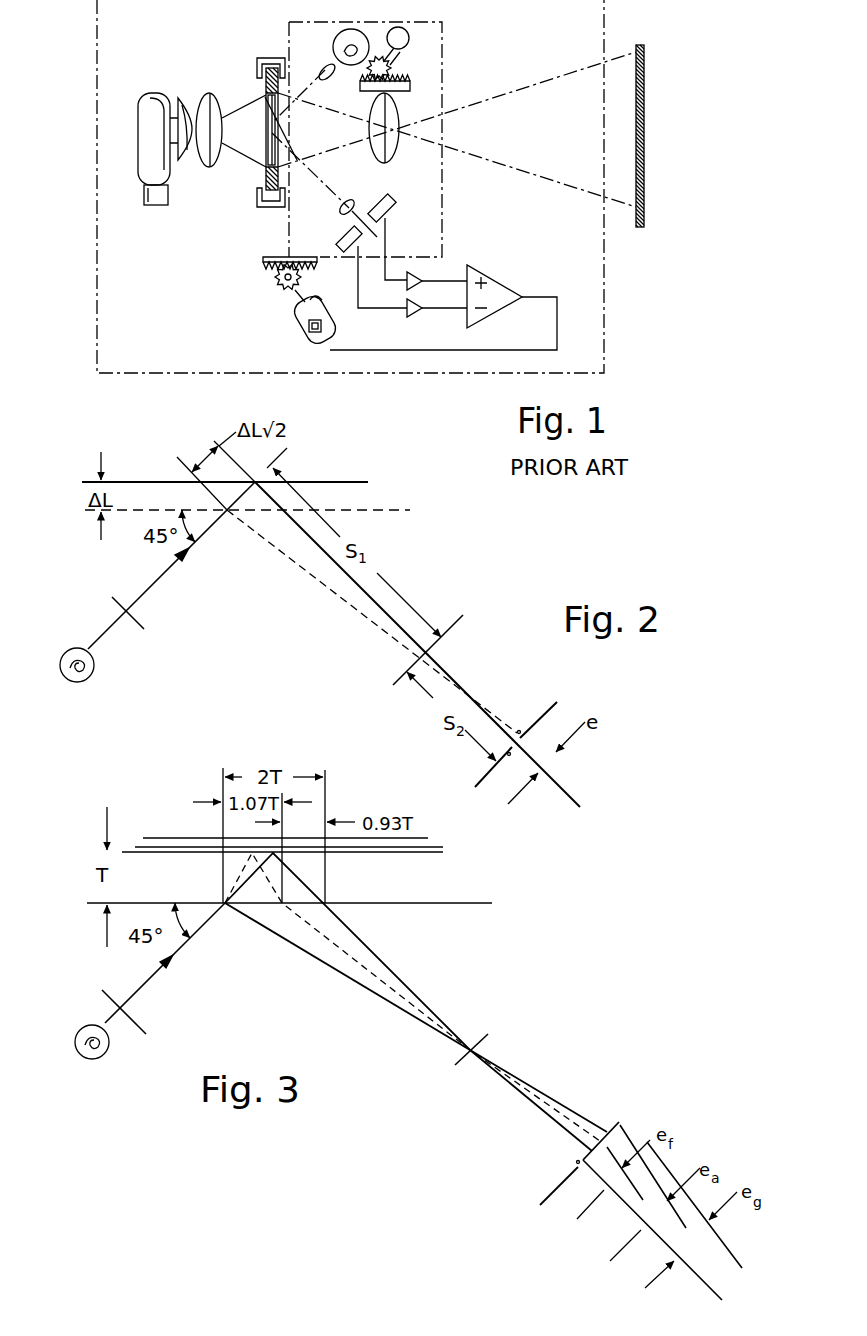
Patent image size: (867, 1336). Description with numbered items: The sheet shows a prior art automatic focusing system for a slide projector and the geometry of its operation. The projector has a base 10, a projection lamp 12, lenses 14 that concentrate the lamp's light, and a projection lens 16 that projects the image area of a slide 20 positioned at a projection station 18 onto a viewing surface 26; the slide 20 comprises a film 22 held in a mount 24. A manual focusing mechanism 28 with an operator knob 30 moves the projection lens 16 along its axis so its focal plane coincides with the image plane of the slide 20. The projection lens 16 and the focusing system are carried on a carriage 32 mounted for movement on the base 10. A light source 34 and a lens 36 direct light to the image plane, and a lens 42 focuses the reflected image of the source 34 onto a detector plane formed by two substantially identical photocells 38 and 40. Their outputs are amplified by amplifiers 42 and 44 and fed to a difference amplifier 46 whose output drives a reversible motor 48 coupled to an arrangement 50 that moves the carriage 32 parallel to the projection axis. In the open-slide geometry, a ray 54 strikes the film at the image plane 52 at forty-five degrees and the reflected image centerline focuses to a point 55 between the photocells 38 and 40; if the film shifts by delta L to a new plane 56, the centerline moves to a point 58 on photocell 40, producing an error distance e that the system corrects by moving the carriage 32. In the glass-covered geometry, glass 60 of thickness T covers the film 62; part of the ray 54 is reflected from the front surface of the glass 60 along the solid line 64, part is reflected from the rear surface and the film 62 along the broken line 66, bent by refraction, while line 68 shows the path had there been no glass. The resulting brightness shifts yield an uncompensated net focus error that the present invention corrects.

In FIG. 1, the base 10 is at (607, 25).
In FIG. 1, the projection lamp 12 is at (142, 94).
In FIG. 1, the lenses 14 is at (207, 94).
In FIG. 1, the projection lens 16 is at (395, 143).
In FIG. 1, the projection station 18 is at (268, 57).
In FIG. 1, the slide 20 is at (261, 99).
In FIG. 1, the film 22 is at (266, 152).
In FIG. 1, the mount 24 is at (259, 195).
In FIG. 1, the viewing surface 26 is at (638, 226).
In FIG. 1, the manual focusing mechanism 28 is at (391, 64).
In FIG. 1, the knob 30 is at (399, 27).
In FIG. 1, the carriage 32 is at (443, 78).
In FIG. 1, the light source 34 is at (354, 29).
In FIG. 2, the light source 34 is at (88, 648).
In FIG. 3, the light source 34 is at (95, 1025).
In FIG. 1, the lens 36 is at (325, 66).
In FIG. 2, the lens 36 is at (138, 622).
In FIG. 3, the lens 36 is at (138, 1020).
In FIG. 1, the first photocell 38 is at (389, 196).
In FIG. 2, the first photocell 38 is at (487, 774).
In FIG. 3, the first photocell 38 is at (561, 1195).
In FIG. 1, the second photocell 40 is at (343, 232).
In FIG. 2, the second photocell 40 is at (561, 698).
In FIG. 3, the second photocell 40 is at (621, 1121).
In FIG. 1, the lens / amplifier 42 is at (352, 201).
In FIG. 2, the lens / amplifier 42 is at (462, 618).
In FIG. 3, the lens / amplifier 42 is at (489, 1046).
In FIG. 1, the amplifier 44 is at (413, 313).
In FIG. 1, the difference amplifier 46 is at (498, 282).
In FIG. 1, the reversible motor 48 is at (302, 322).
In FIG. 1, the arrangement for moving the carriage 50 is at (275, 294).
In FIG. 2, the image plane 52 is at (325, 482).
In FIG. 2, the ray of light 54 is at (174, 565).
In FIG. 3, the ray of light 54 is at (209, 921).
In FIG. 2, the point intermediate the photocells 55 is at (510, 755).
In FIG. 3, the point intermediate the photocells 55 is at (576, 1163).
In FIG. 2, the new plane 56 is at (367, 512).
In FIG. 2, the point on the photocell 58 is at (526, 732).
In FIG. 3, the glass 60 is at (447, 888).
In FIG. 3, the film 62 is at (430, 840).
In FIG. 3, the solid line 64 is at (349, 978).
In FIG. 3, the broken line 66 is at (327, 944).
In FIG. 3, the line 68 is at (388, 966).